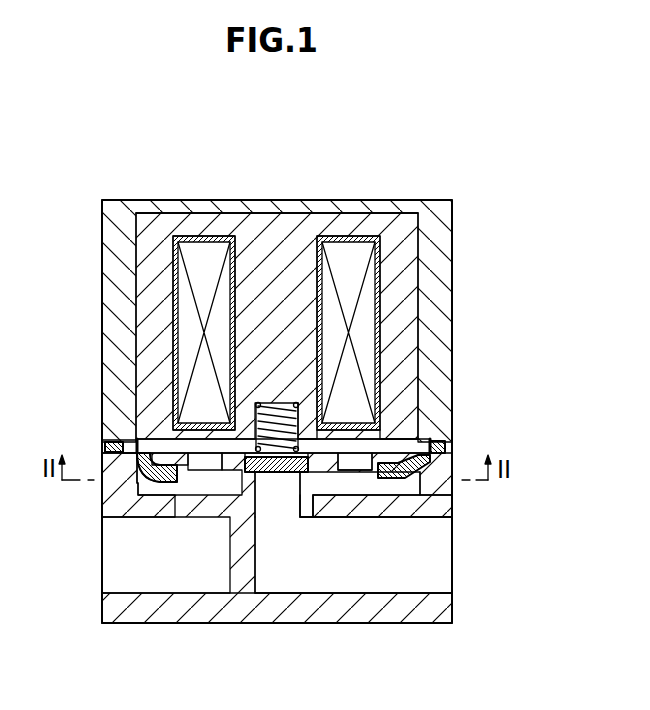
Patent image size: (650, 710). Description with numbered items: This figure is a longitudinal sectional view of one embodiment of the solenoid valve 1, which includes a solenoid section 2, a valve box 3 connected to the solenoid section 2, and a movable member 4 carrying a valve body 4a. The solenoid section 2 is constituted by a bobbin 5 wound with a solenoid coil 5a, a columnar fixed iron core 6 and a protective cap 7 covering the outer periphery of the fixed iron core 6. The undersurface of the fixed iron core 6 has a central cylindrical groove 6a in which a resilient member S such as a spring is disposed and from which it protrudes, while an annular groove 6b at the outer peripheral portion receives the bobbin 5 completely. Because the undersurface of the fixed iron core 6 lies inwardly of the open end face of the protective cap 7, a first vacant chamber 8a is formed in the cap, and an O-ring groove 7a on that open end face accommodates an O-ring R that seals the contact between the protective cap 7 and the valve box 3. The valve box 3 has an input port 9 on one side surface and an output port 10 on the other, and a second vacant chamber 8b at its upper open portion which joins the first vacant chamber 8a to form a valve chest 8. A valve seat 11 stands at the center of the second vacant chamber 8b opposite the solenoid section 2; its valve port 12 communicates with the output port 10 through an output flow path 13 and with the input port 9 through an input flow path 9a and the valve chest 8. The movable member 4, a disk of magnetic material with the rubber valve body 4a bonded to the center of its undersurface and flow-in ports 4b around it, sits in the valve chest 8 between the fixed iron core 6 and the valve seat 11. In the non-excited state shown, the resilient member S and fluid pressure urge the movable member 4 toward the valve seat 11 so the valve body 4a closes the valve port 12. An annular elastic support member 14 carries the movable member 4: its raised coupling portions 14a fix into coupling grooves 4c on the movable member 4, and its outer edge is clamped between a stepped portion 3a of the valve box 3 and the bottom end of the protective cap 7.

The solenoid valve 1 is at (435, 199).
The solenoid section 2 is at (399, 249).
The valve box 3 is at (456, 615).
The stepped portion 3a is at (443, 448).
The movable member 4 is at (400, 437).
The valve body 4a is at (268, 500).
The flow-in ports 4b is at (205, 472).
The coupling grooves 4c is at (437, 500).
The bobbin 5 is at (203, 234).
The solenoid coil 5a is at (183, 312).
The fixed iron core 6 is at (403, 270).
The cylindrical groove 6a is at (328, 418).
The annular groove 6b is at (385, 429).
The protective cap 7 is at (433, 327).
The O-ring groove 7a is at (108, 449).
The valve chest 8 is at (157, 484).
The first vacant chamber 8a is at (142, 458).
The second vacant chamber 8b is at (160, 472).
The input port 9 is at (115, 556).
The input flow path 9a is at (140, 600).
The output port 10 is at (438, 580).
The valve seat 11 is at (320, 484).
The valve port 12 is at (292, 490).
The output flow path 13 is at (275, 560).
The support member 14 is at (430, 483).
The raised coupling portions 14a is at (400, 496).
The O-ring R is at (130, 447).
The resilient member S is at (283, 403).